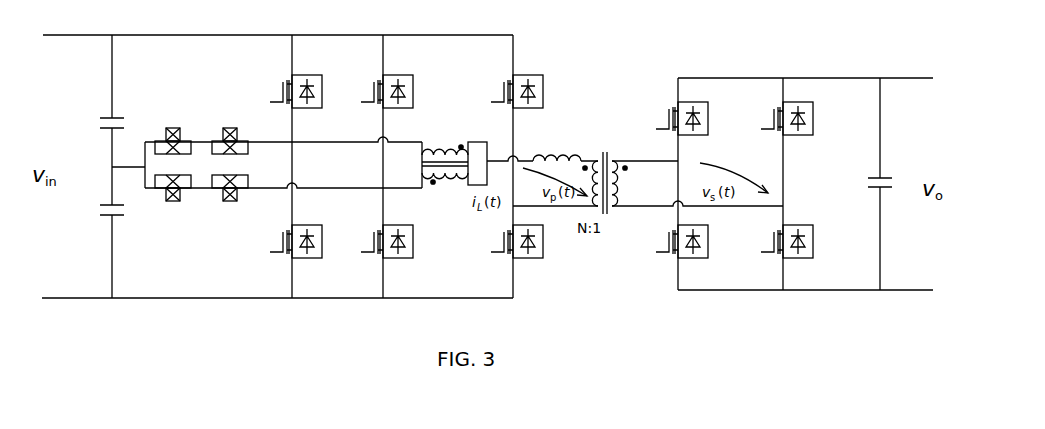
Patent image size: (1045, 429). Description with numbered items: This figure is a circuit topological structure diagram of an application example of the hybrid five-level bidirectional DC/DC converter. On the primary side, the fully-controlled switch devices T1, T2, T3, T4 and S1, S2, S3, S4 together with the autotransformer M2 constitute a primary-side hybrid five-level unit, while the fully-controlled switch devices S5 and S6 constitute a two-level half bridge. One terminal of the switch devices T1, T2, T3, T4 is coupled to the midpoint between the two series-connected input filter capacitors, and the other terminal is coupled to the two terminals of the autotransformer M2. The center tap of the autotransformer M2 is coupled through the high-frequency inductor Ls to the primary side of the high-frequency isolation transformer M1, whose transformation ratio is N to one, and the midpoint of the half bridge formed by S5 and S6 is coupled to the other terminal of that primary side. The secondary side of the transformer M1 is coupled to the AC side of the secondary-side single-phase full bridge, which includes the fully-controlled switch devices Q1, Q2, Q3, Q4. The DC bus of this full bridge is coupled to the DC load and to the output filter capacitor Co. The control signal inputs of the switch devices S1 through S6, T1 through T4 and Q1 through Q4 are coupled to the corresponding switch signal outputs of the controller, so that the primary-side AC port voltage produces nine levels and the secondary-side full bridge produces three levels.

The fully-controlled switch device S1 is at (285, 91).
The fully-controlled switch device S2 is at (285, 241).
The fully-controlled switch device S3 is at (376, 91).
The fully-controlled switch device S4 is at (376, 241).
The fully-controlled switch device S5 is at (507, 91).
The fully-controlled switch device S6 is at (507, 241).
The fully-controlled switch device Q1 is at (669, 118).
The fully-controlled switch device Q2 is at (669, 241).
The fully-controlled switch device Q3 is at (774, 118).
The fully-controlled switch device Q4 is at (774, 241).
The fully-controlled switch device T1 is at (230, 131).
The fully-controlled switch device T2 is at (173, 130).
The fully-controlled switch device T3 is at (230, 203).
The fully-controlled switch device T4 is at (173, 203).
The high-frequency isolation transformer M1 is at (605, 173).
The autotransformer M2 is at (454, 151).
The high-frequency inductor Ls is at (557, 147).
The output filter capacitor Co is at (862, 184).